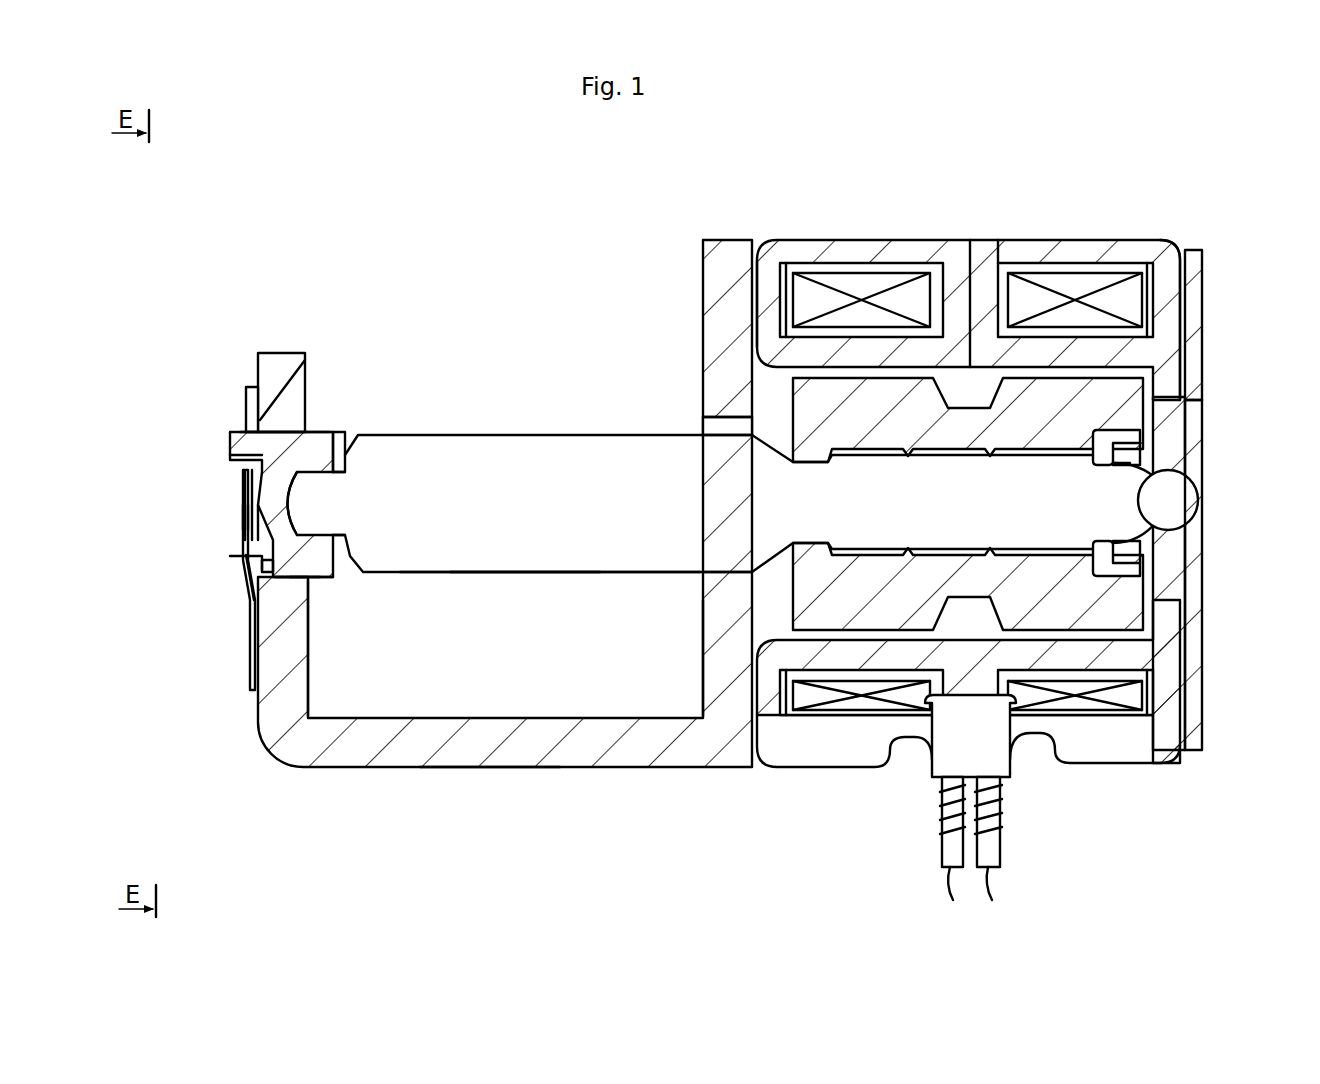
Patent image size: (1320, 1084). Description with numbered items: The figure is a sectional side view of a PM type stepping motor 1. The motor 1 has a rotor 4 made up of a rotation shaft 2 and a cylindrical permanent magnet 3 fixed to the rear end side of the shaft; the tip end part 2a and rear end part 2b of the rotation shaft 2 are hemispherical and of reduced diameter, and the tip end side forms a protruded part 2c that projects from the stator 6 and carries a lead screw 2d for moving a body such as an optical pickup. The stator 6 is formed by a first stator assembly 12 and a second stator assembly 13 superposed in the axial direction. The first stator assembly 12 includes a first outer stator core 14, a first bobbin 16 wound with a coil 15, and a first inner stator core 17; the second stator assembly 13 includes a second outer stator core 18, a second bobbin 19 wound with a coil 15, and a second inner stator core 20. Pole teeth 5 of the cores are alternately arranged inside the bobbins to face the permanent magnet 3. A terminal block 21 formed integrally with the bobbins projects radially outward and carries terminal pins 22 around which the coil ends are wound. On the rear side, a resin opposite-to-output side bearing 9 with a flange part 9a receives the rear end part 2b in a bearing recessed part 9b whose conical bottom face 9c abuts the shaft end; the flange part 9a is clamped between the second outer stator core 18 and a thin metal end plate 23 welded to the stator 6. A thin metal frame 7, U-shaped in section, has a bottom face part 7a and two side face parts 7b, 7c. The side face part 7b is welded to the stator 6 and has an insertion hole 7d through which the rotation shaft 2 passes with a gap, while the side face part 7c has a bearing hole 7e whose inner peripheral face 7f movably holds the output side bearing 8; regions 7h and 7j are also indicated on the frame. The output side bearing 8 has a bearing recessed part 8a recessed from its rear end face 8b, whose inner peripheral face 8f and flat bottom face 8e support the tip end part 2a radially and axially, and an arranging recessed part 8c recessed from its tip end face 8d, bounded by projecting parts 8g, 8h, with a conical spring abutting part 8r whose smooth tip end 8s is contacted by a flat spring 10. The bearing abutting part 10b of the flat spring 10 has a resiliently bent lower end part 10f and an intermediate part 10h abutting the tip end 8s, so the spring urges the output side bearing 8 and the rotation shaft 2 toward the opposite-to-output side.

The motor 1 is at (572, 262).
The rotation shaft 2 is at (650, 434).
The end part on the output side 2a is at (318, 432).
The end part on the opposite-to-output side 2b is at (1152, 452).
The protruded part 2c is at (519, 576).
The lead screw 2d is at (522, 600).
The permanent magnet 3 is at (705, 410).
The rotor 4 is at (680, 360).
The pole teeth 5 is at (866, 369).
The stator 6 is at (1181, 181).
The frame 7 is at (467, 539).
The bottom face part 7a is at (493, 768).
The side face part 7b is at (702, 680).
The side face part 7c is at (282, 352).
The insertion hole 7d is at (705, 576).
The bearing hole 7e is at (300, 577).
The inner peripheral face 7f is at (345, 596).
The projection 7h is at (250, 392).
The inner peripheral face 7j is at (310, 648).
The output side bearing 8 is at (264, 490).
The bearing recessed part 8a is at (333, 535).
The rear end face 8b is at (343, 452).
The arranging recessed part 8c is at (228, 477).
The tip end face 8d is at (240, 455).
The bottom face 8e is at (298, 494).
The inner peripheral face 8f is at (333, 473).
The projecting part 8g is at (238, 432).
The projecting part 8h is at (262, 568).
The spring abutting part 8r is at (246, 530).
The tip end of the spring abutting part 8s is at (246, 490).
The opposite-to-output side bearing 9 is at (1203, 555).
The flange part 9a is at (1203, 668).
The bearing recessed part 9b is at (1168, 520).
The bottom face 9c is at (1172, 482).
The flat spring 10 is at (248, 680).
The bearing abutting part 10b is at (243, 508).
The lower end part 10f is at (250, 590).
The intermediate part 10h is at (200, 508).
The first stator assembly 12 is at (863, 418).
The second stator assembly 13 is at (1081, 418).
The first outer stator core 14 is at (828, 239).
The coil 15 is at (866, 239).
The first bobbin 16 is at (790, 239).
The first inner stator core 17 is at (928, 270).
The second outer stator core 18 is at (1082, 239).
The second bobbin 19 is at (1145, 286).
The second inner stator core 20 is at (985, 239).
The terminal block 21 is at (935, 760).
The terminal pins 22 is at (951, 868).
The end plate 23 is at (1203, 280).